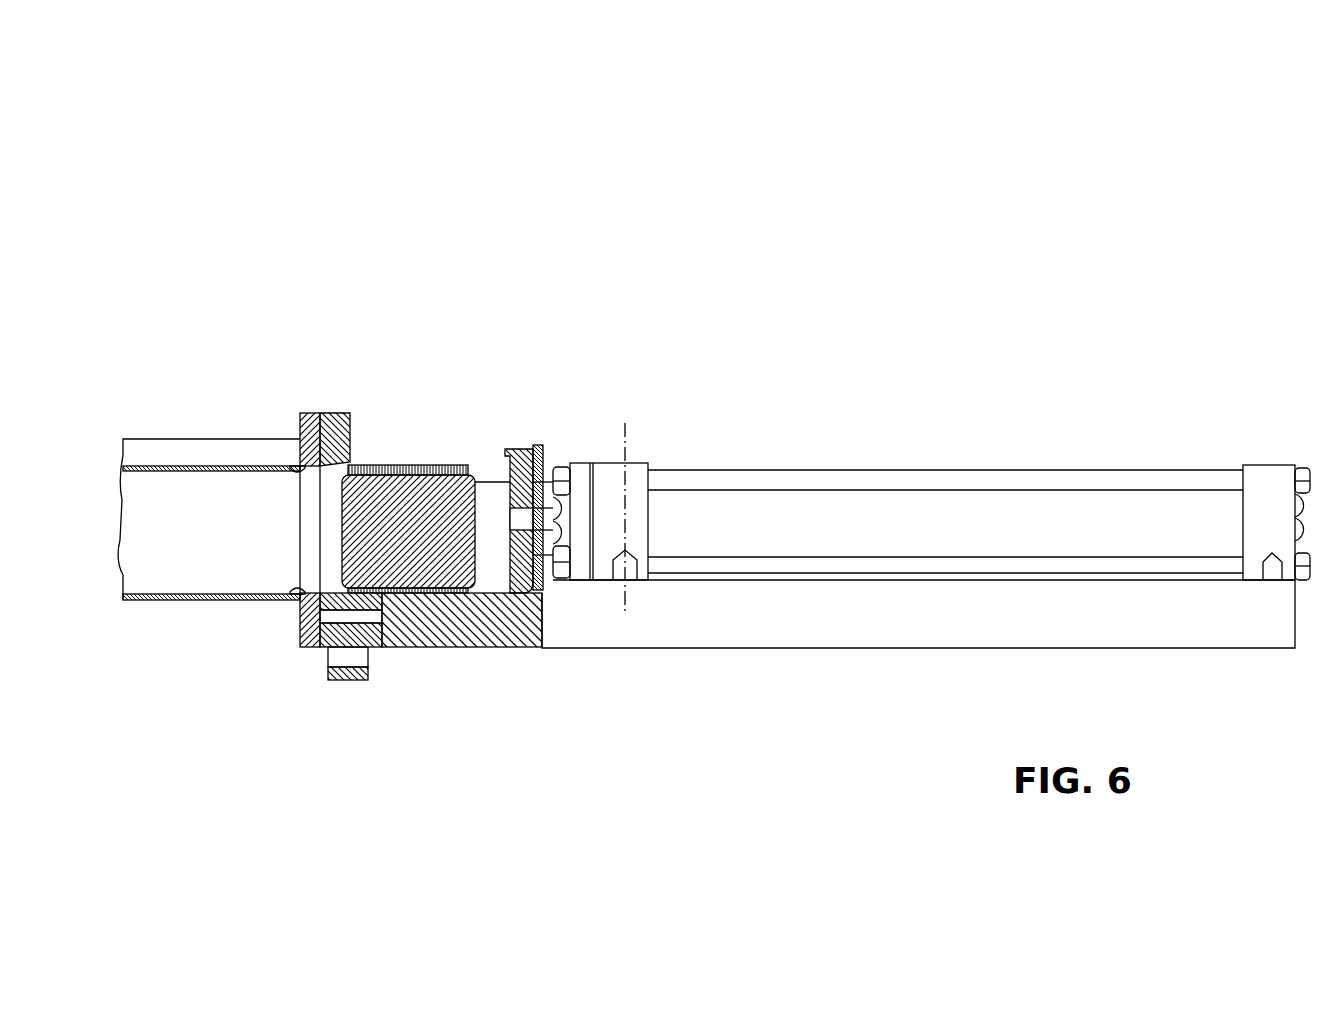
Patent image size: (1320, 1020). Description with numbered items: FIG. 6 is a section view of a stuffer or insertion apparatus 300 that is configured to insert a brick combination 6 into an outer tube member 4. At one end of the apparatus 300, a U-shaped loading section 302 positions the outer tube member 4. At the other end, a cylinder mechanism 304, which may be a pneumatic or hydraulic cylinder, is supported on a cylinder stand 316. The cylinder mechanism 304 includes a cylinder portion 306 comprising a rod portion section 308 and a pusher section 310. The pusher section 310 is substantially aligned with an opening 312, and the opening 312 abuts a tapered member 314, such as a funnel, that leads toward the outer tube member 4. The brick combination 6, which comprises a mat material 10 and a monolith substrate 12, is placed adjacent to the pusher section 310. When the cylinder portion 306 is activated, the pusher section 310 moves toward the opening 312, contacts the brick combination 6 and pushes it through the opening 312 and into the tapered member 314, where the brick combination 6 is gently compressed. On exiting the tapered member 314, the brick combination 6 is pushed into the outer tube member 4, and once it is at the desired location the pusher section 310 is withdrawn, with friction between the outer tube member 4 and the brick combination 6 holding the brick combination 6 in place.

The insertion apparatus 300 is at (642, 178).
The U-shaped loading section 302 is at (195, 450).
The outer tube member 4 is at (158, 580).
The tapered member 314 is at (288, 468).
The opening 312 is at (298, 590).
The monolith substrate 12 is at (436, 463).
The mat material 10 is at (393, 553).
The brick combination 6 is at (450, 589).
The pusher section 310 is at (538, 447).
The rod portion section 308 is at (562, 515).
The cylinder mechanism 304 is at (898, 467).
The cylinder portion 306 is at (1040, 525).
The cylinder stand 316 is at (716, 614).